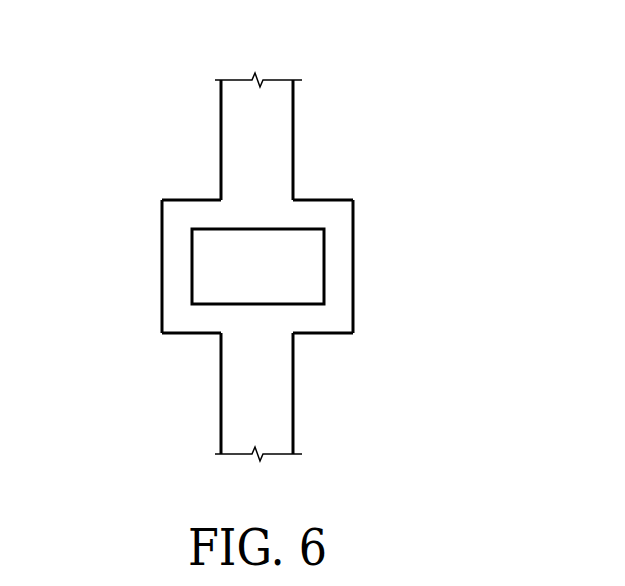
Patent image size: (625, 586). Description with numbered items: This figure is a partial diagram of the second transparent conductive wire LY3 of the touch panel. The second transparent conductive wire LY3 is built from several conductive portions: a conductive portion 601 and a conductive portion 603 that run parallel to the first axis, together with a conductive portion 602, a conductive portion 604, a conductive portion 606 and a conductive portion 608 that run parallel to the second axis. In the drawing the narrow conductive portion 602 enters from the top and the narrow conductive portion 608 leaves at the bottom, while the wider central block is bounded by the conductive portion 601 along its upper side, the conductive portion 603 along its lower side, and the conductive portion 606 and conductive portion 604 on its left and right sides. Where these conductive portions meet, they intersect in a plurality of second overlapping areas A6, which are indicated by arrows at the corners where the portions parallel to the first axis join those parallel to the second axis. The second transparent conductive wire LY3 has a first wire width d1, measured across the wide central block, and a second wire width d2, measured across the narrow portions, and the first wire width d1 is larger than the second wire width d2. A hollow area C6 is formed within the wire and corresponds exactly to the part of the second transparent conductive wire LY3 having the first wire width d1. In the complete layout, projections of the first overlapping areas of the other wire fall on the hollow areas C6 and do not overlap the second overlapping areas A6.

The conductive portion 601 is at (306, 212).
The conductive portion 602 is at (282, 107).
The conductive portion 603 is at (307, 343).
The conductive portion 604 is at (347, 271).
The conductive portion 606 is at (172, 270).
The conductive portion 608 is at (282, 427).
The second overlapping area A6 is at (358, 193).
The hollow area C6 is at (290, 250).
The first wire width d1 is at (340, 291).
The second wire width d2 is at (280, 144).
The second transparent conductive wire LY3 is at (258, 54).